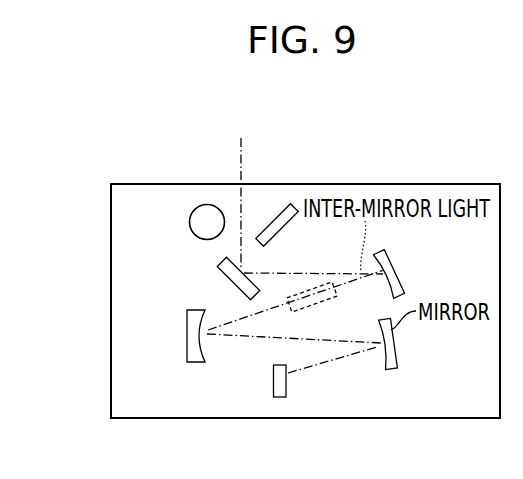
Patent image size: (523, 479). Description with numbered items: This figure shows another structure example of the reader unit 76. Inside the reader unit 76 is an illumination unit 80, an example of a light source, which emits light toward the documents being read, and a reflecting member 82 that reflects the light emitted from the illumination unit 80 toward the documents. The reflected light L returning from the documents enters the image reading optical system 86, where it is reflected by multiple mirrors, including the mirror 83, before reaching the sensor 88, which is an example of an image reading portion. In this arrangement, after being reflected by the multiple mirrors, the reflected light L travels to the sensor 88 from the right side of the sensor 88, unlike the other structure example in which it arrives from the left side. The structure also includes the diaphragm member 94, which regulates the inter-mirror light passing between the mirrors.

The reader unit 76 is at (100, 382).
The illumination unit 80 is at (189, 226).
The reflecting member 82 is at (287, 207).
The mirror 83 is at (218, 267).
The image reading optical system 86 is at (146, 267).
The sensor 88 is at (279, 398).
The diaphragm member 94 is at (333, 300).
The reflected light L is at (240, 164).